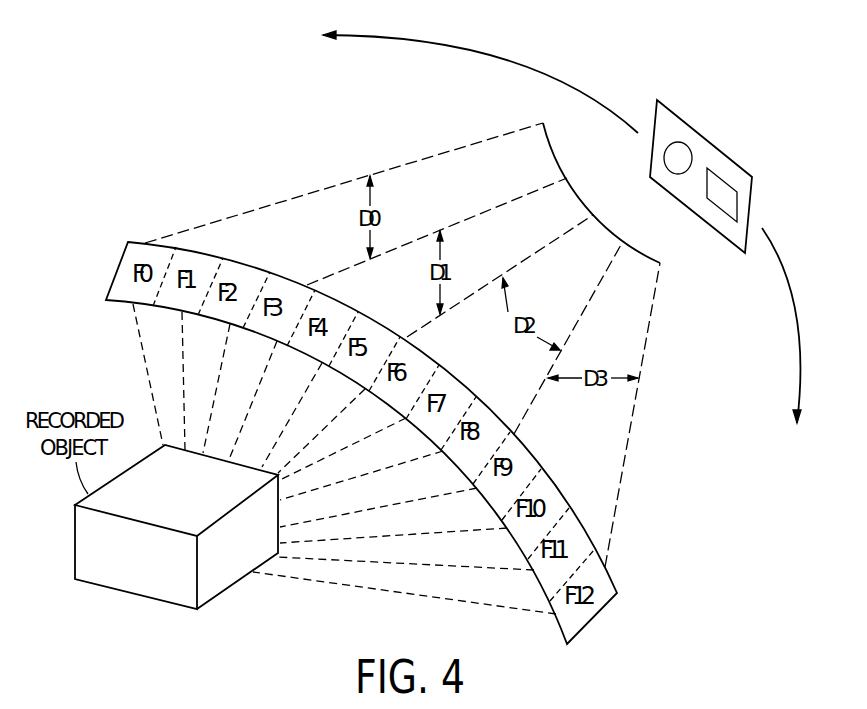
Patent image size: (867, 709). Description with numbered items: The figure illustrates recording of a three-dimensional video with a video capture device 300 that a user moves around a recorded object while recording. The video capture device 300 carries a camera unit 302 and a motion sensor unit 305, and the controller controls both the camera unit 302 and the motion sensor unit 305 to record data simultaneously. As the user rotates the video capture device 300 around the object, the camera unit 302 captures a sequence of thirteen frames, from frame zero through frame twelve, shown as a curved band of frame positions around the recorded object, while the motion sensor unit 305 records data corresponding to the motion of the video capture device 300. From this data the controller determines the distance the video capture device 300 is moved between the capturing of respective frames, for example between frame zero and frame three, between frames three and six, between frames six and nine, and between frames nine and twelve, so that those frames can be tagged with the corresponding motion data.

The video capture device 300 is at (715, 147).
The camera unit 302 is at (672, 156).
The motion sensor unit 305 is at (728, 200).